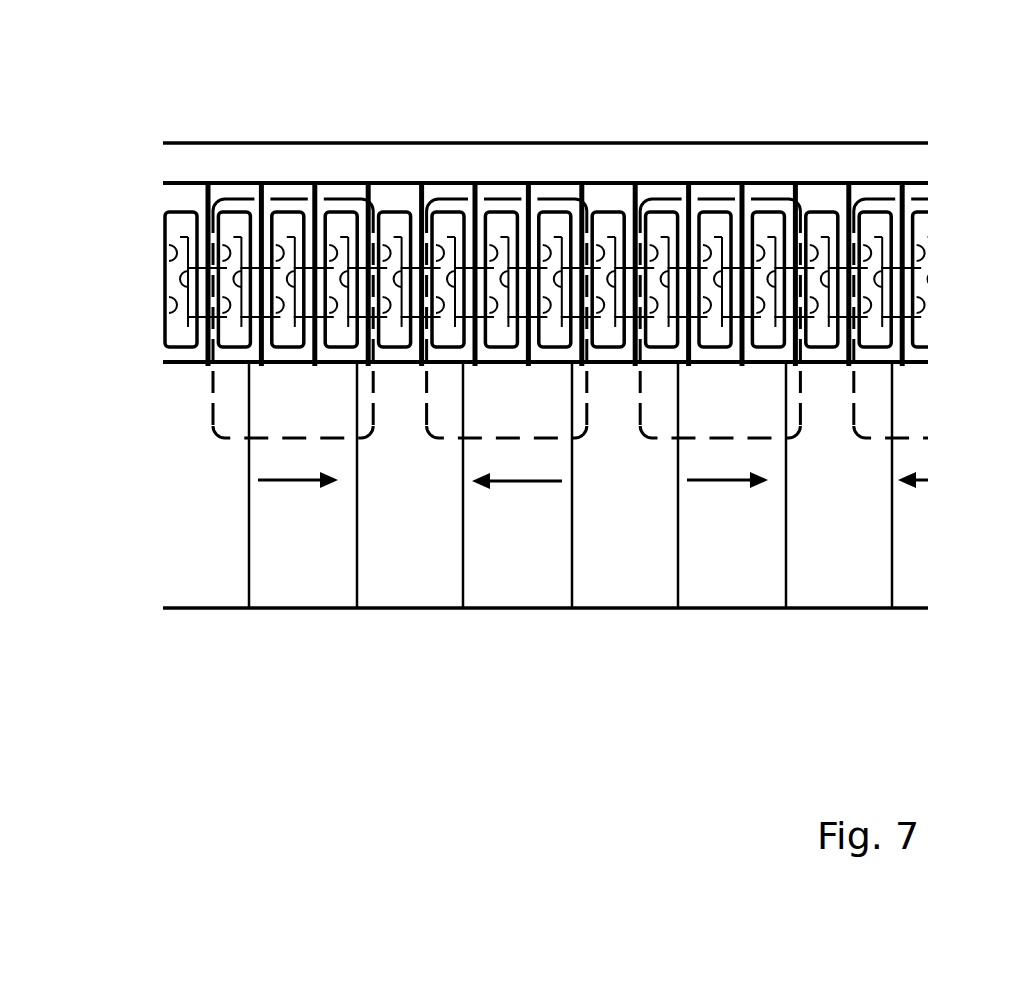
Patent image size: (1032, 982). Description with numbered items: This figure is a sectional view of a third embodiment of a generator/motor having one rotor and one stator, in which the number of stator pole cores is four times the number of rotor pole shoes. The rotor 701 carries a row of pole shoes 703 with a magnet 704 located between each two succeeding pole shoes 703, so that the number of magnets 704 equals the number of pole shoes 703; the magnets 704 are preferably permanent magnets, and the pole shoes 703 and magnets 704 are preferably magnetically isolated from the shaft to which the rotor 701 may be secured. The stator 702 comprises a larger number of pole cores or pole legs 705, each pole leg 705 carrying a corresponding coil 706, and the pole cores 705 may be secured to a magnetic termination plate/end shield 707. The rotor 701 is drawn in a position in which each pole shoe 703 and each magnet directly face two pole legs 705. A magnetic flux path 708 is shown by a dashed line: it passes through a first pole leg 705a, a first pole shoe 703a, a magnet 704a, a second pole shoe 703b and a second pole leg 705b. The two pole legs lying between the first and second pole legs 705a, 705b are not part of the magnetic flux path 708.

The rotor 701 is at (165, 507).
The stator 702 is at (165, 198).
The pole shoe 703 is at (837, 545).
The first pole shoe 703a is at (410, 550).
The second pole shoe 703b is at (635, 538).
The magnet 704 is at (730, 540).
The magnet 704a is at (518, 547).
The pole core or pole leg 705 is at (792, 240).
The first pole leg 705a is at (422, 240).
The second pole leg 705b is at (589, 366).
The coil 706 is at (807, 255).
The magnetic termination plate/end shield 707 is at (238, 162).
The magnetic flux path 708 is at (427, 413).